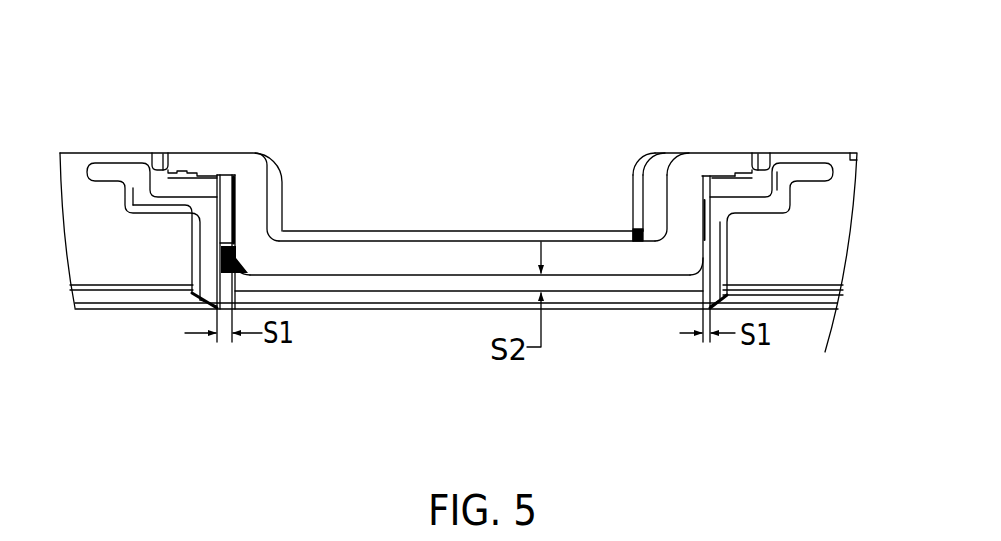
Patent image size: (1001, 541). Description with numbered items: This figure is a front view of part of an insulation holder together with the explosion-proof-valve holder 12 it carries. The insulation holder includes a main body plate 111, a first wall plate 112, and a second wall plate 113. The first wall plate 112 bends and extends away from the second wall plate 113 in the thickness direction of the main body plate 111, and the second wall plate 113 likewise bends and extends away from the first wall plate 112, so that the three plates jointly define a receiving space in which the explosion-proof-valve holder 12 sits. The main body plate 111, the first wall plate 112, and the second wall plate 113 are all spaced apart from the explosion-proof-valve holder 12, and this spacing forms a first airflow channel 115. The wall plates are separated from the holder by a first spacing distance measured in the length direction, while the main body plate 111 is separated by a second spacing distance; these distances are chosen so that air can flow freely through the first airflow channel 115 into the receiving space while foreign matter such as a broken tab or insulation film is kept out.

The explosion-proof-valve holder 12 is at (512, 260).
The main body plate 111 is at (429, 302).
The first wall plate 112 is at (208, 230).
The second wall plate 113 is at (715, 247).
The first airflow channel 115 is at (742, 178).